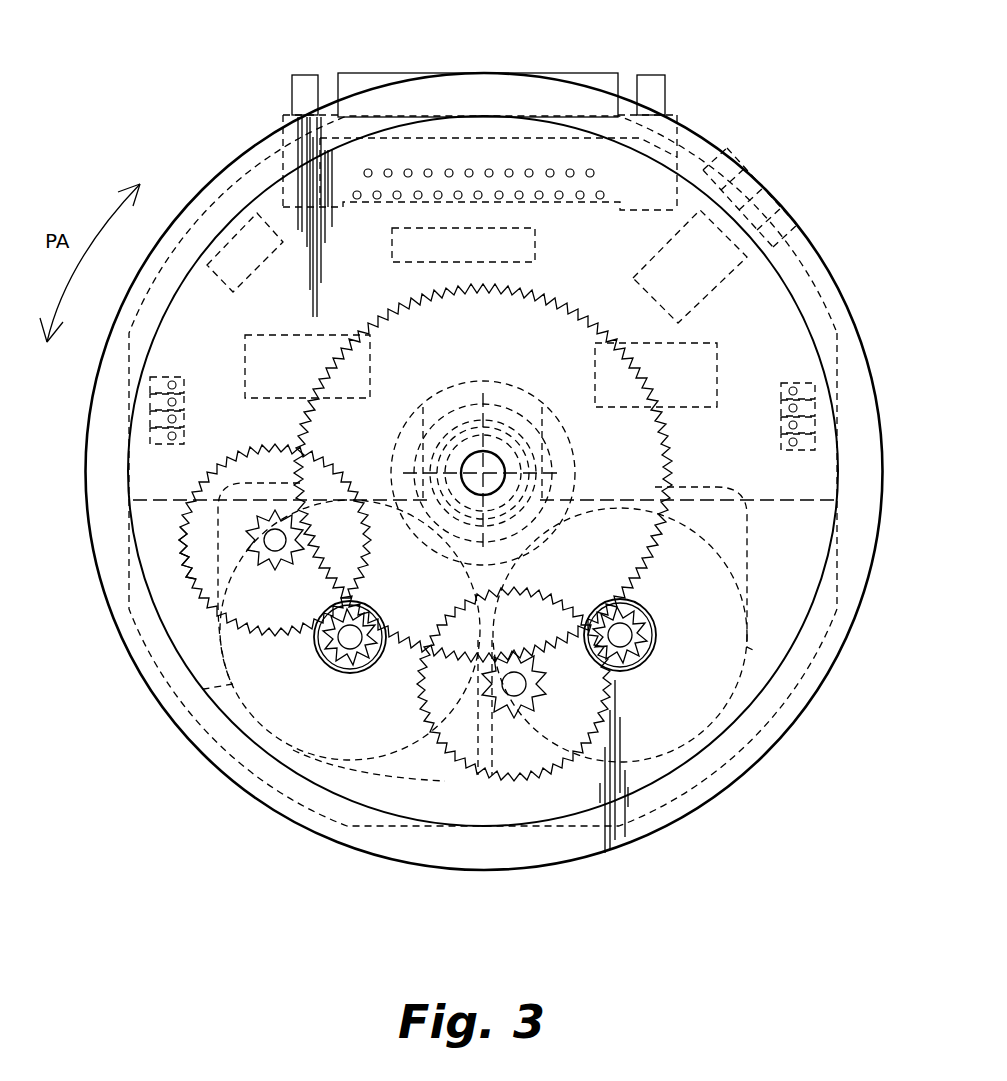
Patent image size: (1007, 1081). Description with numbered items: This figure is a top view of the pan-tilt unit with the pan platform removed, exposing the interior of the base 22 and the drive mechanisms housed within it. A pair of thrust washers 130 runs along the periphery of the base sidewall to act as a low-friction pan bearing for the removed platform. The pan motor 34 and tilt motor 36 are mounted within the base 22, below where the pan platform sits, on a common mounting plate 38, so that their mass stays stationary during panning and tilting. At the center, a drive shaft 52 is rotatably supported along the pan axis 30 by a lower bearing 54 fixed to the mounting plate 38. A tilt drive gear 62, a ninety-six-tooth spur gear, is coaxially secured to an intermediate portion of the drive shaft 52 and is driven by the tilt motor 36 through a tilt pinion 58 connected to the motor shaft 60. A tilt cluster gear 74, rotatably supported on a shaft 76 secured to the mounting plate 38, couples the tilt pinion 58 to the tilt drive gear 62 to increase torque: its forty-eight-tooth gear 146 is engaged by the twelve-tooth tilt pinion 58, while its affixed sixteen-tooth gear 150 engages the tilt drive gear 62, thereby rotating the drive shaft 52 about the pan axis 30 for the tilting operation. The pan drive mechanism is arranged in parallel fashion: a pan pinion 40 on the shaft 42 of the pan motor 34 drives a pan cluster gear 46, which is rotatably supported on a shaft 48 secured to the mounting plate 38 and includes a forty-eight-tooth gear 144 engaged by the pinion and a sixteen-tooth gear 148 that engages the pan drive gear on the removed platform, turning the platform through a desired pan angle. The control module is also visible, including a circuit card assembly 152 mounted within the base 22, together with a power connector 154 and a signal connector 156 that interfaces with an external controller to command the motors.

The base 22 is at (733, 789).
The thrust washers 130 is at (146, 664).
The circuit card assembly 152 is at (783, 265).
The power connector 154 is at (712, 152).
The signal connector 156 is at (585, 73).
The pan axis 30 is at (481, 468).
The drive shaft 52 is at (500, 457).
The lower bearing 54 is at (552, 412).
The tilt drive gear 62 is at (672, 437).
The mounting plate 38 is at (236, 445).
The pan cluster gear 46 is at (181, 587).
The 48-tooth gear 144 is at (205, 556).
The shaft 48 is at (268, 538).
The 16-tooth gear 148 is at (282, 518).
The pan motor 34 is at (238, 683).
The tilt motor 36 is at (757, 652).
The pan pinion 40 is at (317, 653).
The shaft 42 is at (343, 640).
The tilt pinion 58 is at (653, 633).
The shaft 60 is at (657, 643).
The tilt cluster gear 74 is at (548, 776).
The 16-tooth gear 150 is at (522, 700).
The shaft 76 is at (512, 697).
The 48-tooth gear 146 is at (560, 773).